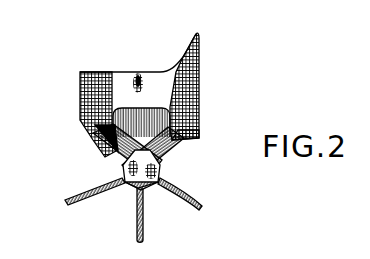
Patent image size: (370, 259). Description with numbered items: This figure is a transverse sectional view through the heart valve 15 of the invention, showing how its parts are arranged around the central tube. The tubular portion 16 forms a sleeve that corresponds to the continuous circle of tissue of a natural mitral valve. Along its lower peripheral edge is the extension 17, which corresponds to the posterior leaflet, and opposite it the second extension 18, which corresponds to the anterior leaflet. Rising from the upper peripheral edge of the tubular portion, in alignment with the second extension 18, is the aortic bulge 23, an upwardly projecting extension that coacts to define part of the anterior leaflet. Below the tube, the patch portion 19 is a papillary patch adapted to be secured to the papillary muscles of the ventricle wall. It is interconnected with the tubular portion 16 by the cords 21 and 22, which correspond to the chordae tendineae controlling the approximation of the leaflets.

The heart valve 15 is at (106, 71).
The tubular portion 16 is at (82, 93).
The extension 17 is at (80, 133).
The second extension 18 is at (200, 142).
The patch portion 19 is at (123, 183).
The cord 21 is at (107, 157).
The cord 22 is at (177, 167).
The aortic bulge 23 is at (200, 40).